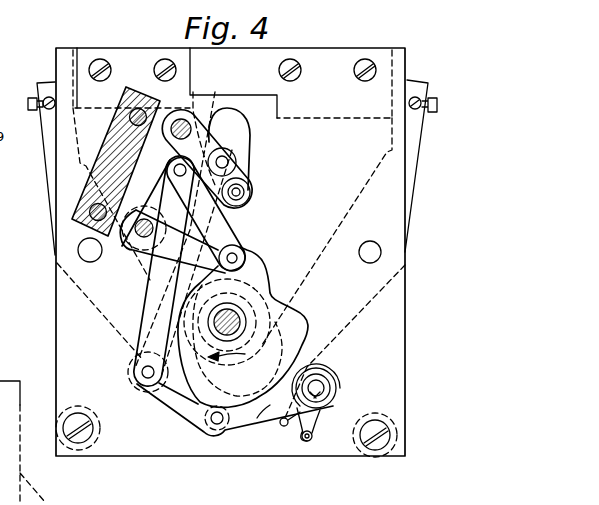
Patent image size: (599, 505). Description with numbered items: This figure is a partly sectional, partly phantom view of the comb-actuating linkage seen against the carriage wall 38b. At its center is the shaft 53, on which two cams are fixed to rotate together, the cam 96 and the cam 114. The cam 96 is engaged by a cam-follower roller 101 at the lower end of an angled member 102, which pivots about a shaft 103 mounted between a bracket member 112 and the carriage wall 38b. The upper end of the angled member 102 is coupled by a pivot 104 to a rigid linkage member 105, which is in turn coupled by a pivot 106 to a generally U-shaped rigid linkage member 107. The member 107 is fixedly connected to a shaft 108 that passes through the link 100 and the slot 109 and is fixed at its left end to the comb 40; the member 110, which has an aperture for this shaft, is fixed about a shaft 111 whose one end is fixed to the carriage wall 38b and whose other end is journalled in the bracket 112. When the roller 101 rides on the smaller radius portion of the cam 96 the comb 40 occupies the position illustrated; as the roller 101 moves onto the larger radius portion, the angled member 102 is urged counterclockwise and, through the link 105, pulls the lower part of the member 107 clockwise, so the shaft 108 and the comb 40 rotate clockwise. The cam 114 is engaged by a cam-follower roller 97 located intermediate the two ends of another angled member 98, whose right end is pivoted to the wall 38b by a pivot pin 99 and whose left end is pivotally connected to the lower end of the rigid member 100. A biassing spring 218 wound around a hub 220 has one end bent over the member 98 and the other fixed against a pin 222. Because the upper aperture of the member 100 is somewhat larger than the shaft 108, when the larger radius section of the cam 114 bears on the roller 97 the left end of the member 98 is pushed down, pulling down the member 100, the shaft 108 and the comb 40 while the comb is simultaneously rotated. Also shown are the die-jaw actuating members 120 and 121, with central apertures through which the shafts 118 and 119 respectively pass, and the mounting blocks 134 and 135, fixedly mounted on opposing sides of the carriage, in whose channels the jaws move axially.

The mounting block 134 is at (58, 54).
The mounting block 135 is at (394, 62).
The die-jaw actuating member 120 is at (46, 126).
The die-jaw actuating member 121 is at (409, 217).
The bracket member 112 is at (78, 212).
The shaft 118 is at (80, 256).
The shaft 119 is at (368, 262).
The shaft 103 is at (137, 240).
The angled member 102 is at (165, 266).
The link 100 is at (160, 308).
The angled member 98 is at (170, 392).
The pivot 104 is at (178, 176).
The rigid linkage member 105 is at (212, 195).
The cam-follower roller 101 is at (228, 243).
The shaft 111 is at (176, 118).
The member 110 is at (186, 113).
The comb 40 is at (180, 233).
The slot 109 is at (242, 115).
The shaft 108 is at (229, 158).
The rigid linkage member 107 is at (247, 174).
The pivot 106 is at (243, 192).
The cam 114 is at (266, 262).
The shaft 53 is at (235, 315).
The cam-follower roller 97 is at (193, 418).
The cam 96 is at (260, 398).
The biassing spring 218 is at (333, 380).
The pivot pin 99 is at (319, 400).
The hub 220 is at (286, 428).
The pin 222 is at (311, 444).
The carriage wall 38b is at (328, 444).